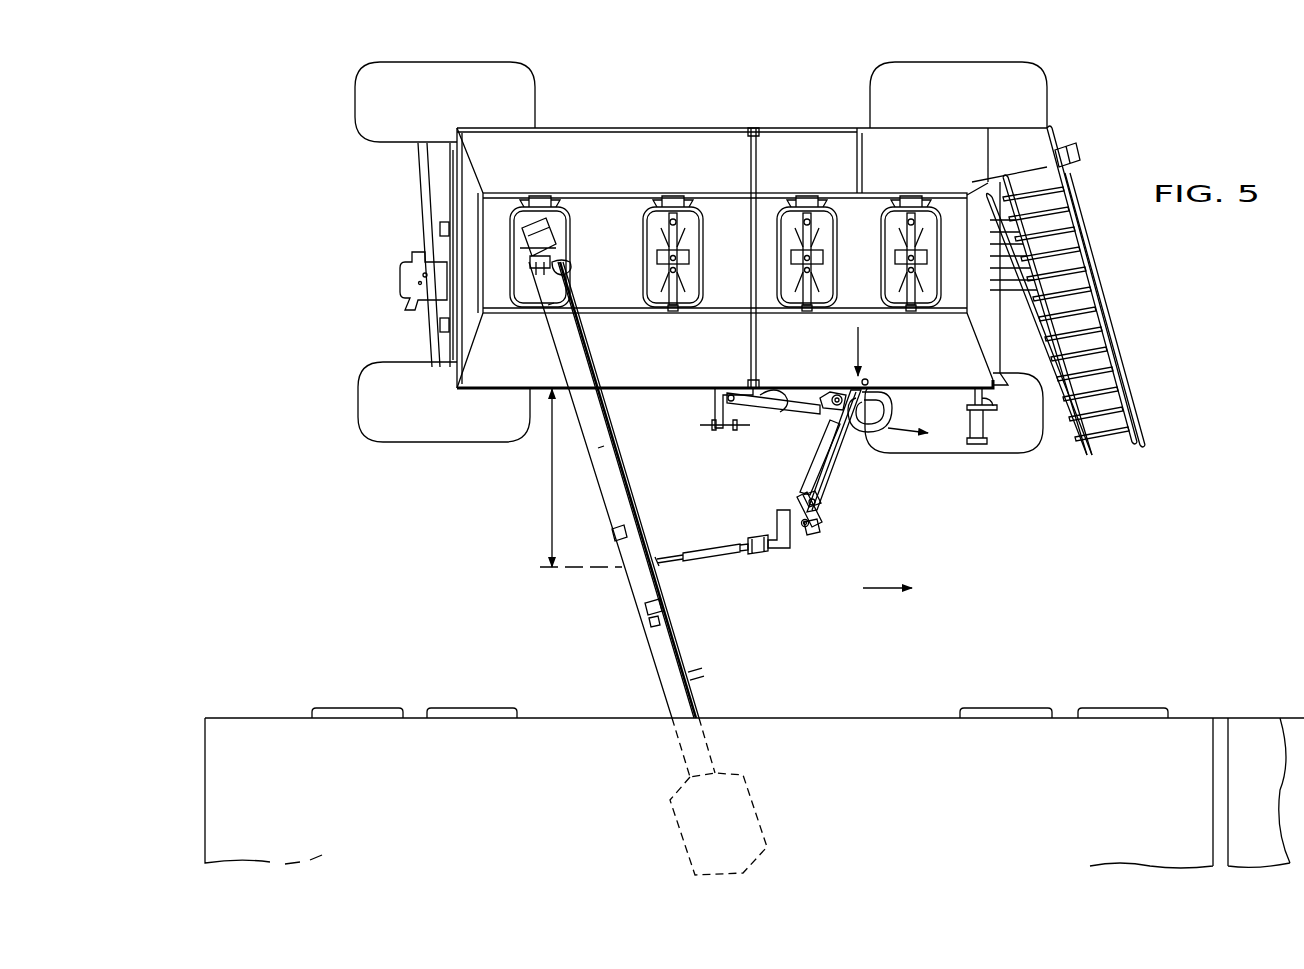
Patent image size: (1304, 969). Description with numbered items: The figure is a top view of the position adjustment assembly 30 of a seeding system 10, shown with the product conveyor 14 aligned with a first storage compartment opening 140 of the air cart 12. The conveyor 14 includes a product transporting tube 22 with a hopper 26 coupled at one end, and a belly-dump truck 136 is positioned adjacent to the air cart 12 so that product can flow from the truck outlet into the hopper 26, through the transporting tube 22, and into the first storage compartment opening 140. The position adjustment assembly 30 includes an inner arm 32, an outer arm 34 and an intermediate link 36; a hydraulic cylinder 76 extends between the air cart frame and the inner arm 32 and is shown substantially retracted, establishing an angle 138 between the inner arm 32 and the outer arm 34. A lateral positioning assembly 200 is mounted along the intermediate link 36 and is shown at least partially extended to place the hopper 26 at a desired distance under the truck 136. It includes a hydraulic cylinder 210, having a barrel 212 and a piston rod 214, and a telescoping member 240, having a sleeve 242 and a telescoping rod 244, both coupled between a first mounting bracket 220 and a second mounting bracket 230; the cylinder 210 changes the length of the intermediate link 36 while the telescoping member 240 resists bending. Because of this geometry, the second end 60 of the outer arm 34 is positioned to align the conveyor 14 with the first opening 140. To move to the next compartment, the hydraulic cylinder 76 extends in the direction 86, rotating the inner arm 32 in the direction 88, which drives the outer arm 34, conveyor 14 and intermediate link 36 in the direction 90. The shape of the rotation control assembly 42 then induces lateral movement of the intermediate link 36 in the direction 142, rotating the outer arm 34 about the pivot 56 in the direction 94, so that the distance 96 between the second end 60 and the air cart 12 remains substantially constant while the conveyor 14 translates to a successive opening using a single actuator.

The seeding system 10 is at (302, 492).
The air cart 12 is at (306, 258).
The product conveyor 14 is at (458, 558).
The product transporting tube 22 is at (648, 658).
The hopper 26 is at (760, 802).
The position adjustment assembly 30 is at (813, 583).
The inner arm 32 is at (811, 387).
The outer arm 34 is at (702, 562).
The intermediate link 36 is at (825, 473).
The rotation control assembly 42 is at (873, 387).
The pivot 56 is at (753, 552).
The second end of the outer arm 60 is at (658, 558).
The hydraulic cylinder 76 is at (727, 410).
The direction of hydraulic cylinder extension 86 is at (902, 430).
The direction of inner arm rotation 88 is at (770, 386).
The direction of outer arm and conveyor movement 90 is at (883, 590).
The direction of outer arm rotation 94 is at (768, 572).
The distance 96 is at (550, 488).
The belly-dump truck 136 is at (1137, 766).
The angle 138 is at (772, 508).
The first storage compartment opening 140 is at (562, 232).
The direction of lateral movement of the intermediate link 142 is at (860, 352).
The lateral positioning assembly 200 is at (832, 503).
The hydraulic cylinder 210 is at (825, 530).
The barrel 212 is at (817, 517).
The piston rod 214 is at (812, 528).
The first mounting bracket 220 is at (818, 493).
The second mounting bracket 230 is at (808, 545).
The telescoping member 240 is at (797, 497).
The sleeve 242 is at (812, 488).
The telescoping rod 244 is at (800, 512).